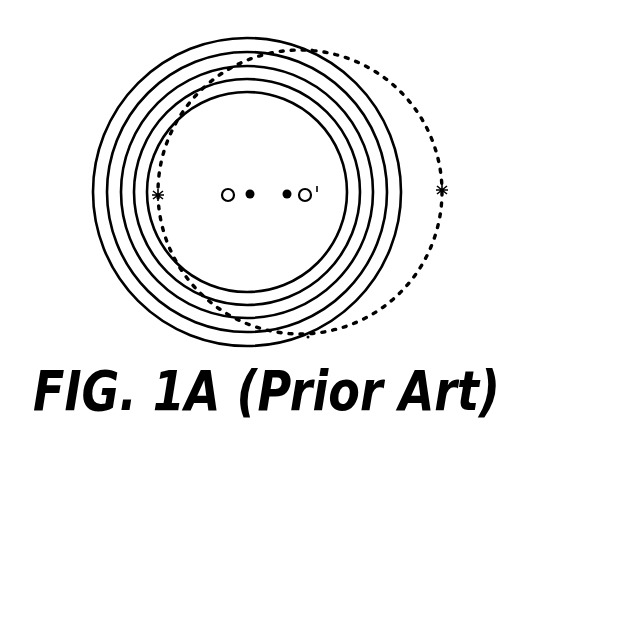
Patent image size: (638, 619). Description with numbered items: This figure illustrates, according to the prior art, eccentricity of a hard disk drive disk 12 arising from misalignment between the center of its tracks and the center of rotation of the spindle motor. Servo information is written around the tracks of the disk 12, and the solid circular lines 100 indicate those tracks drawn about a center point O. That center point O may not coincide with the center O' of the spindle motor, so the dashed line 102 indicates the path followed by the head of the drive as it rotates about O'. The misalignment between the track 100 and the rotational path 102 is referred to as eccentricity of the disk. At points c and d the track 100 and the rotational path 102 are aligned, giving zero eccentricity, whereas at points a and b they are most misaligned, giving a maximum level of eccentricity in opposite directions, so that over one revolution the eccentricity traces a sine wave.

The disk 12 is at (230, 181).
The tracks 100 is at (116, 110).
The rotational path 102 is at (417, 103).
The point a is at (168, 196).
The point b is at (452, 191).
The point c is at (314, 49).
The point d is at (311, 339).